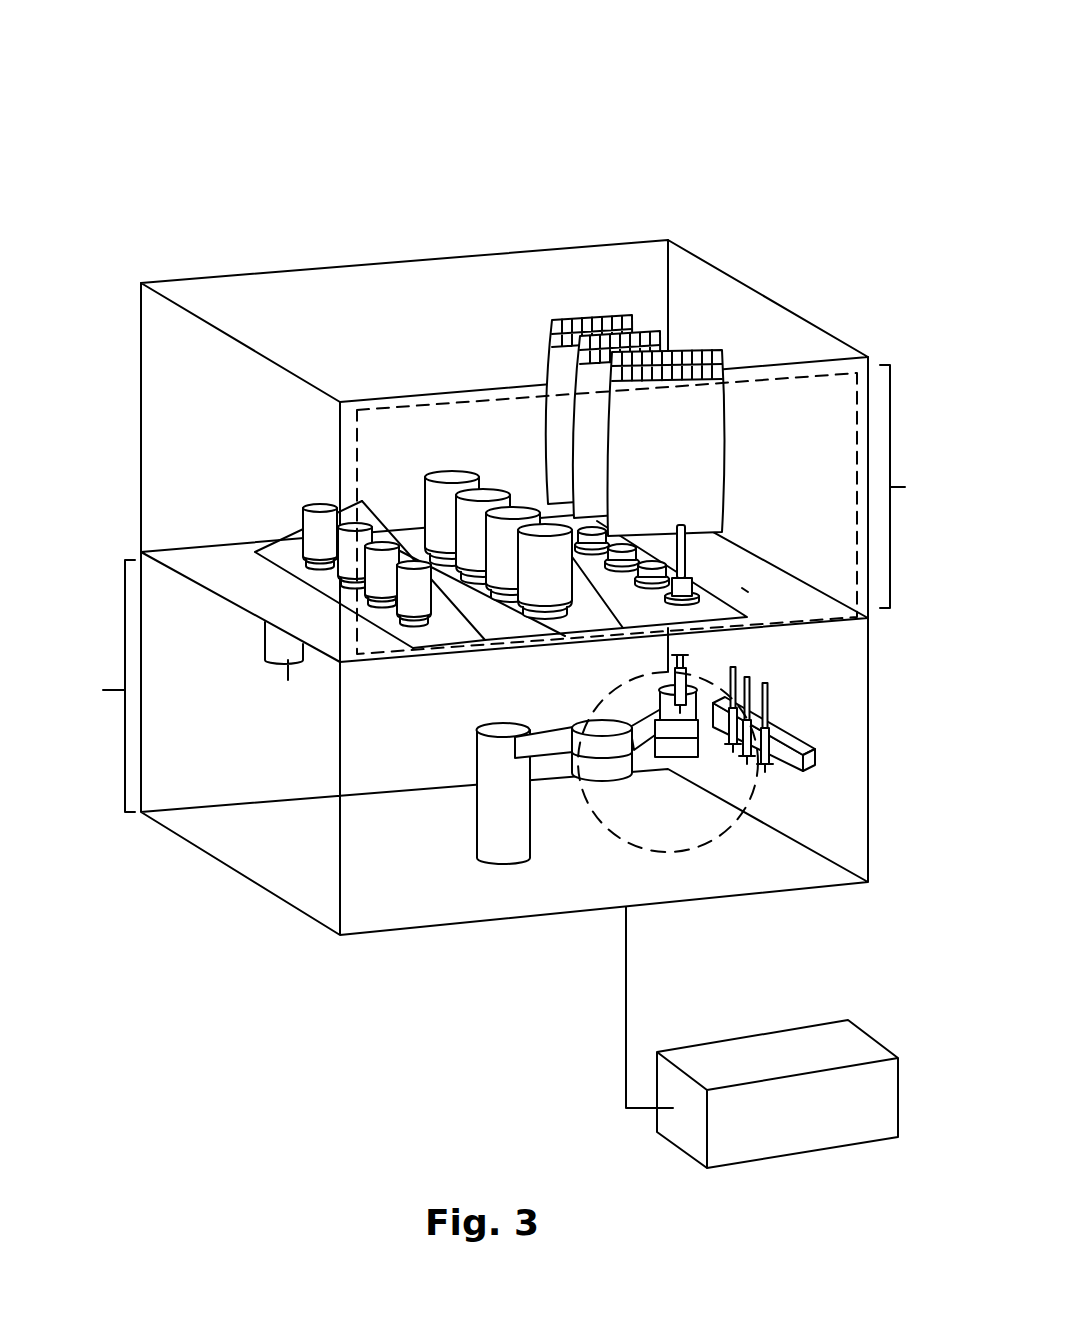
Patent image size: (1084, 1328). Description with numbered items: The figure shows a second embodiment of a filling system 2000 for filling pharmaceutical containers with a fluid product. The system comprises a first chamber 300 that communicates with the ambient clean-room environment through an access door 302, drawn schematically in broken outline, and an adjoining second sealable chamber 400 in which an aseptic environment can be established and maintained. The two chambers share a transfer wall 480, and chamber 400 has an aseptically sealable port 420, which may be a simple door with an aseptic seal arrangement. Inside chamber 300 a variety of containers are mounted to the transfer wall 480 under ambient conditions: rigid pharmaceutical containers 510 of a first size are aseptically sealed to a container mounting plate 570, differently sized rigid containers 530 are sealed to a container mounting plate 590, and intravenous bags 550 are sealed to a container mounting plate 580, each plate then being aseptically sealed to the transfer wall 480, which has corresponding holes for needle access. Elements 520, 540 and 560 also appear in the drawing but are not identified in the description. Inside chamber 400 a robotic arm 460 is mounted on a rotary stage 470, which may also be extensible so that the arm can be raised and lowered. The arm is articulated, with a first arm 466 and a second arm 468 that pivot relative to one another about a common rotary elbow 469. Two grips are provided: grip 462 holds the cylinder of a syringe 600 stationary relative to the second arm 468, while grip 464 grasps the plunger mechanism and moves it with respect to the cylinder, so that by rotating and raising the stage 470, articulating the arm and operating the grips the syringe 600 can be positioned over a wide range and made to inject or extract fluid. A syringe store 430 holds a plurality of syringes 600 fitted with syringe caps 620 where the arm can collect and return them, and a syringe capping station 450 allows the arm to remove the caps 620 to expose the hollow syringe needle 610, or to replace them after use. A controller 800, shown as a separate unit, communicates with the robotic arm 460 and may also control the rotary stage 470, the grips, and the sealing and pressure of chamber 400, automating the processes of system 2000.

The filling system 2000 is at (392, 215).
The access door 302 is at (471, 402).
The first chamber 300 is at (922, 486).
The second sealable chamber 400 is at (455, 659).
The syringe capping station 450 is at (278, 648).
The rigid pharmaceutical containers of a first size 510 is at (316, 505).
The vial tray 520 is at (413, 646).
The rigid pharmaceutical containers of a second size 530 is at (437, 469).
The bottle tray 540 is at (490, 640).
The intravenous bags 550 is at (655, 440).
The syringe holder 560 is at (727, 545).
The container mounting plate 570 is at (258, 552).
The container mounting plate 580 is at (738, 568).
The container mounting plate 590 is at (545, 626).
The transfer wall 480 is at (742, 590).
The robotic arm 460 is at (597, 768).
The grip 462 is at (672, 653).
The grip 464 is at (680, 757).
The first arm 466 is at (533, 748).
The second arm 468 is at (657, 722).
The rotary elbow 469 is at (582, 743).
The rotary stage 470 is at (483, 750).
The hollow syringe needle 610 is at (668, 705).
The syringe caps 620 is at (720, 700).
The syringe 600 is at (766, 775).
The syringe store 430 is at (808, 765).
The aseptically sealable port 420 is at (716, 853).
The controller 800 is at (807, 1103).